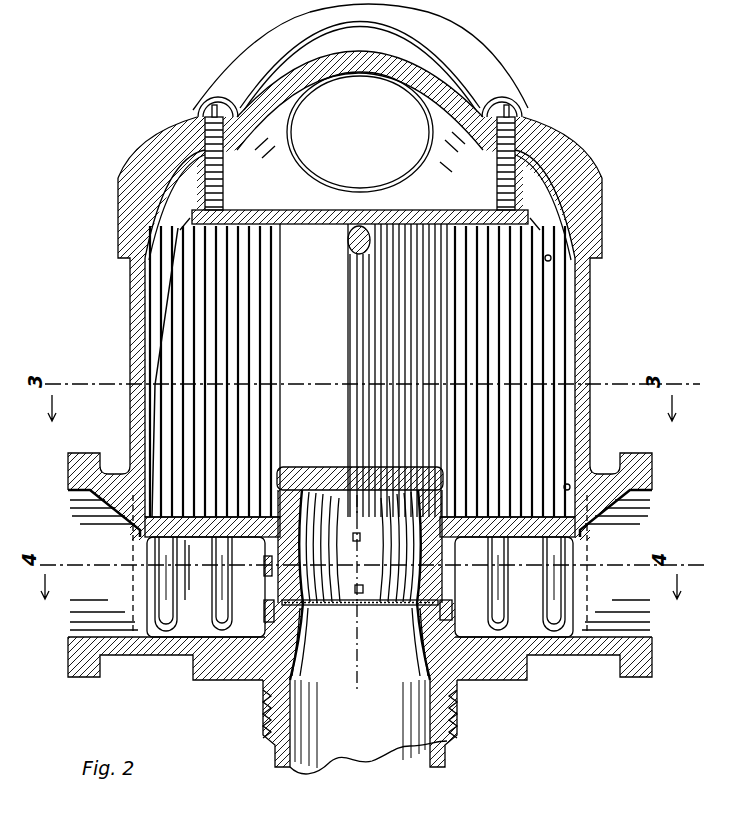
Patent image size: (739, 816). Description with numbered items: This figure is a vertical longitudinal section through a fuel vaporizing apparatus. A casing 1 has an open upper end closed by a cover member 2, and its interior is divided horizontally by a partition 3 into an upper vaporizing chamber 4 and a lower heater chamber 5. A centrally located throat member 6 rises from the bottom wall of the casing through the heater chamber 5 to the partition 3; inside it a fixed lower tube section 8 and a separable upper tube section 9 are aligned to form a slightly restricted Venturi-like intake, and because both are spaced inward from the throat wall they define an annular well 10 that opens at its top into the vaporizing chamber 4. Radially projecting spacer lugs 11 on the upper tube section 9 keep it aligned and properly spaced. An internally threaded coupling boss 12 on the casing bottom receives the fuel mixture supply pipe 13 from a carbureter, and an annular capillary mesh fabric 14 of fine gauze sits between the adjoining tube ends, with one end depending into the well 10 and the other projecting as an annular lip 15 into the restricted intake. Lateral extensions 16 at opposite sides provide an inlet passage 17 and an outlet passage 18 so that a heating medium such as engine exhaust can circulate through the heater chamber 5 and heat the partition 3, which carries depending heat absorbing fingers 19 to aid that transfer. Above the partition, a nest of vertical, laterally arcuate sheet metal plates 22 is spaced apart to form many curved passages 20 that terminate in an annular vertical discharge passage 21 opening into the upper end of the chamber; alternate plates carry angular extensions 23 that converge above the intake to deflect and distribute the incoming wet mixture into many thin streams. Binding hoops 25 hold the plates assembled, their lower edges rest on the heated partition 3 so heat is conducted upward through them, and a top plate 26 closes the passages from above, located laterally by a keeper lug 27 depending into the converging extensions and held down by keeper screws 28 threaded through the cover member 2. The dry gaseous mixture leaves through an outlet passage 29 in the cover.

The casing 1 is at (592, 282).
The cover member 2 is at (548, 178).
The partition 3 is at (194, 534).
The vaporizing chamber 4 is at (360, 181).
The heater chamber 5 is at (193, 570).
The throat member 6 is at (266, 578).
The lower tube section 8 is at (420, 620).
The upper tube section 9 is at (310, 532).
The annular well 10 is at (446, 579).
The spacer lugs 11 is at (462, 603).
The coupling boss 12 is at (458, 714).
The fuel mixture supply pipe 13 is at (272, 762).
The capillary mesh fabric 14 is at (268, 613).
The annular lip 15 is at (318, 612).
The lateral extensions 16 is at (108, 478).
The inlet passage 17 is at (88, 598).
The outlet passage 18 is at (625, 600).
The heat absorbing fingers 19 is at (226, 598).
The curved passages 20 is at (220, 316).
The annular vertical discharge passage 21 is at (148, 370).
The sheet metal plates 22 is at (235, 432).
The angular extension 23 is at (322, 216).
The binding hoops 25 is at (552, 258).
The top plate 26 is at (458, 216).
The keeper lug 27 is at (378, 234).
The keeper screws 28 is at (200, 132).
The outlet passage 29 is at (360, 132).